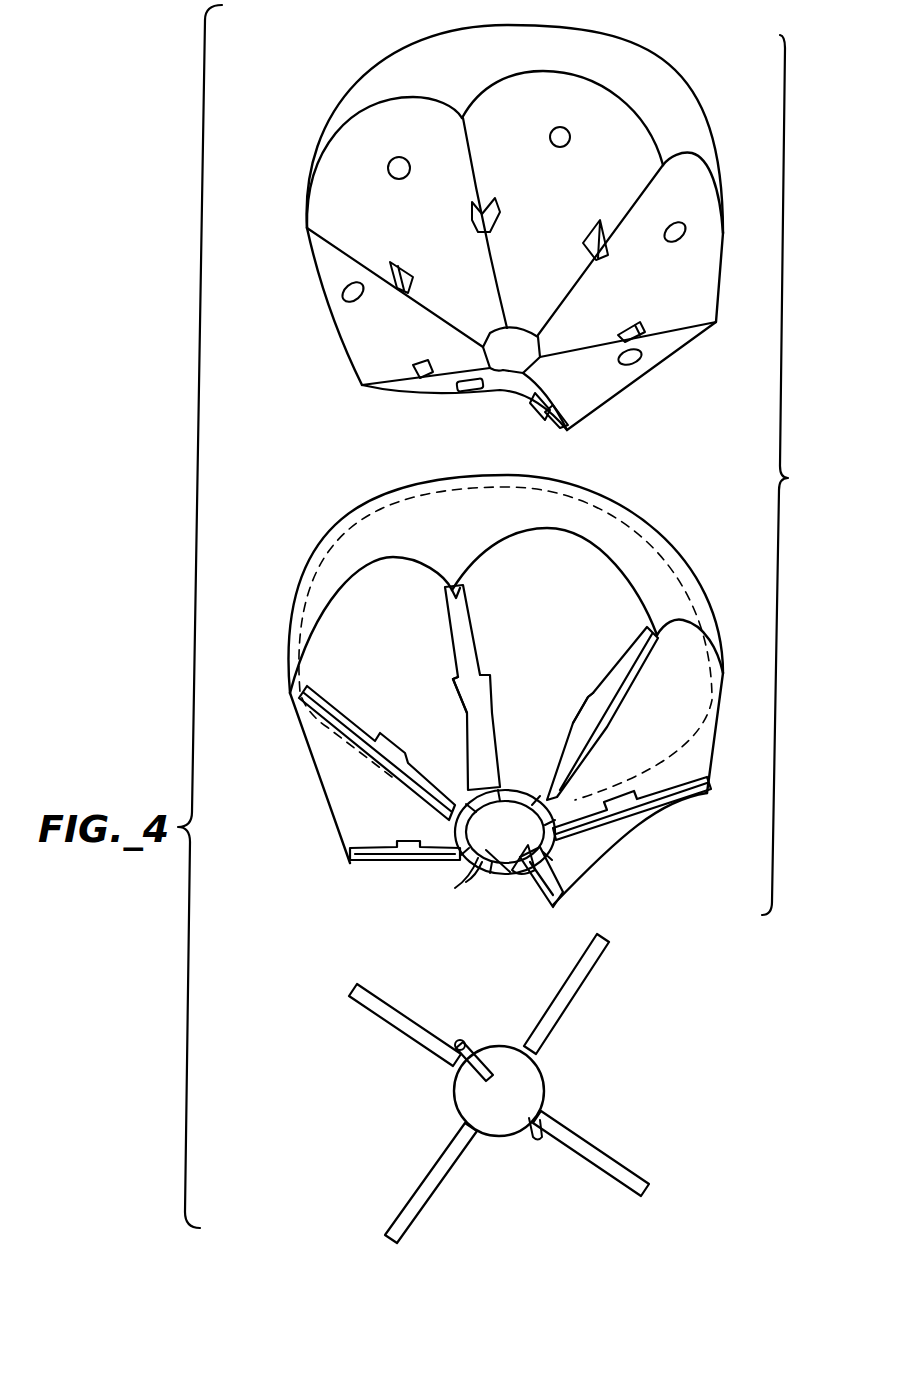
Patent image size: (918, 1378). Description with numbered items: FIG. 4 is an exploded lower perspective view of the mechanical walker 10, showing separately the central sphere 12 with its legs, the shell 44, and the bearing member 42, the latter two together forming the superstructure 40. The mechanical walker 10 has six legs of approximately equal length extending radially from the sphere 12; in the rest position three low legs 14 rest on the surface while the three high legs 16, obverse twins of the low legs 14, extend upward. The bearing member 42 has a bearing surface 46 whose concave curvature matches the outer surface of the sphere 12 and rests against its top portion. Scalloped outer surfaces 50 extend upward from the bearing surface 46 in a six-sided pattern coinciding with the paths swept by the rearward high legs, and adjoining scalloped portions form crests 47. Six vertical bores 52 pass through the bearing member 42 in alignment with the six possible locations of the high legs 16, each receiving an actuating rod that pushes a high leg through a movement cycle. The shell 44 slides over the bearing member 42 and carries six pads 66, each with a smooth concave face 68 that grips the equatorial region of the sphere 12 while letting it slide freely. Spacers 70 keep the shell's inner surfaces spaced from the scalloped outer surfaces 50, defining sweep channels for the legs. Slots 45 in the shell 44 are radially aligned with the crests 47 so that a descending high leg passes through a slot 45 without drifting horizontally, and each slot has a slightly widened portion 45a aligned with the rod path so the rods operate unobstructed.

The mechanical walker 10 is at (300, 440).
The central sphere 12 is at (535, 1090).
The low legs 14 is at (425, 1180).
The high legs 16 is at (383, 997).
The superstructure 40 is at (793, 475).
The bearing member 42 is at (623, 56).
The shell 44 is at (340, 795).
The slots 45 is at (472, 615).
The widened portion 45a is at (458, 705).
The bearing surface 46 is at (510, 330).
The crests 47 is at (640, 192).
The scalloped outer surfaces 50 is at (515, 250).
The vertical bores 52 is at (602, 230).
The pads 66 is at (482, 790).
The concave face 68 is at (480, 872).
The spacers 70 is at (402, 162).